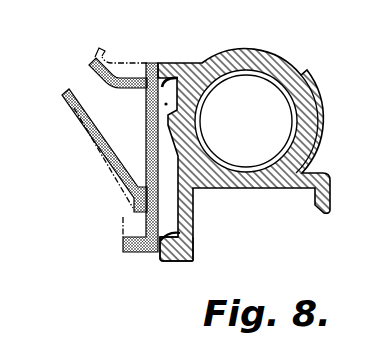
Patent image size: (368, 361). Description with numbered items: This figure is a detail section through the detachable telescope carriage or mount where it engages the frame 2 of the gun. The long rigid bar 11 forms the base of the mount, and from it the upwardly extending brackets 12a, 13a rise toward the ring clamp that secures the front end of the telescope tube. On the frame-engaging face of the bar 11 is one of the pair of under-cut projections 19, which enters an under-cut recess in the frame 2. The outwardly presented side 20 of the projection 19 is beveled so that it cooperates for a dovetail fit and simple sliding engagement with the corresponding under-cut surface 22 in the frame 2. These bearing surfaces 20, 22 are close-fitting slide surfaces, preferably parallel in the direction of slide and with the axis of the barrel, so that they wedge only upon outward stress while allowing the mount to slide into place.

The base flange of housing 2 is at (196, 250).
The bar 11 is at (152, 141).
The bracket 12a is at (84, 136).
The bracket 13a is at (112, 50).
The under-cut projection 19 is at (158, 106).
The beveled outwardly presented side 20 is at (196, 62).
The under-cut surface 22 is at (161, 63).